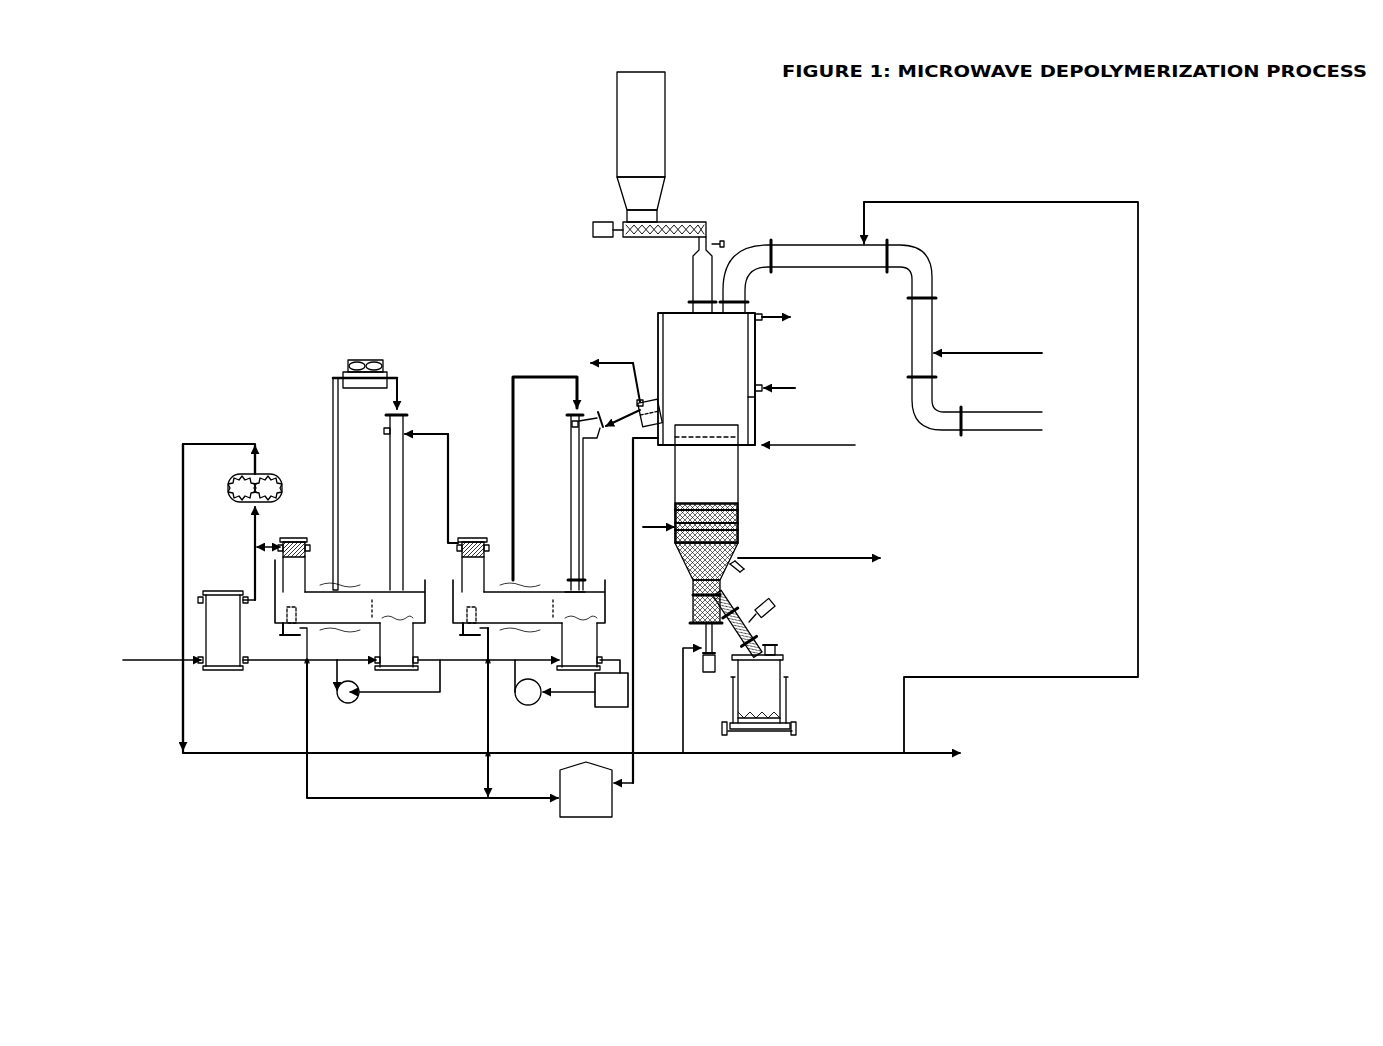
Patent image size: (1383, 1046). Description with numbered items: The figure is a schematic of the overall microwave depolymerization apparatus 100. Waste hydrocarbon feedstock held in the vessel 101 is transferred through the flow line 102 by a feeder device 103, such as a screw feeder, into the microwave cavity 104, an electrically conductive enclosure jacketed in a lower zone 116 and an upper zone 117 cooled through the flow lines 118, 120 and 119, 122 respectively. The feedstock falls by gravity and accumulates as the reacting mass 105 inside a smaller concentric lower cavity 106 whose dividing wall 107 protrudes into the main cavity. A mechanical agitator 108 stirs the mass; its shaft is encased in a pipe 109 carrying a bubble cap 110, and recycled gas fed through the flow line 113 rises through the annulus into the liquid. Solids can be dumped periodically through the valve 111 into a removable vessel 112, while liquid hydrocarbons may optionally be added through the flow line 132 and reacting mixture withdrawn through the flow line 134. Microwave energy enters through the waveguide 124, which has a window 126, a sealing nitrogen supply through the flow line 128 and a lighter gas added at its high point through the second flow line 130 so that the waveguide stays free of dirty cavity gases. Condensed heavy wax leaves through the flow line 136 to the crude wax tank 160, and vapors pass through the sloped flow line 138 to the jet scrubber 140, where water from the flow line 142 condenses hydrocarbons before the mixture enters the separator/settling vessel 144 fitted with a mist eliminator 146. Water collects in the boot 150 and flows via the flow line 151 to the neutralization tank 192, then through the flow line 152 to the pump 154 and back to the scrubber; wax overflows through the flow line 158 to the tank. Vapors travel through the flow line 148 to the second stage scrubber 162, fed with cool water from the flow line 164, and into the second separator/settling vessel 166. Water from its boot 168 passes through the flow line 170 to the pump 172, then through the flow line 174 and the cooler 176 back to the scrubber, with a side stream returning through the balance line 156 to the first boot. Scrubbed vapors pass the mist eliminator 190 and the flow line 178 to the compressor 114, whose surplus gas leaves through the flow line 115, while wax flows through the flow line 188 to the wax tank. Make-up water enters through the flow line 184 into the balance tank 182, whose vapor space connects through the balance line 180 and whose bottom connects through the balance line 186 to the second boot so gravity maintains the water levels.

The microwave depolymerization apparatus 100 is at (1105, 151).
The vessel 101 is at (628, 163).
The flow line 102 is at (700, 292).
The feeder device 103 is at (690, 222).
The microwave cavity 104 is at (708, 372).
The reacting mass 105 is at (712, 506).
The lower microwave cavity 106 is at (742, 476).
The dividing wall 107 is at (742, 428).
The mechanical agitator 108 is at (724, 526).
The pipe 109 is at (720, 582).
The bubble cap 110 is at (718, 547).
The valve 111 is at (772, 612).
The vessel 112 is at (738, 683).
The flow line 113 is at (684, 656).
The compressor 114 is at (263, 473).
The flow line 115 is at (735, 756).
The lower jacket zone 116 is at (758, 420).
The upper jacket zone 117 is at (758, 360).
The flow line 118 is at (848, 447).
The flow line 119 is at (786, 386).
The flow line 120 is at (602, 381).
The flow line 122 is at (768, 312).
The waveguide 124 is at (931, 322).
The window 126 is at (966, 420).
The flow line 128 is at (990, 352).
The second flow line 130 is at (868, 220).
The flow line 132 is at (662, 524).
The flow line 134 is at (873, 555).
The flow line 136 is at (630, 542).
The flow line 138 is at (622, 432).
The jet scrubber 140 is at (570, 481).
The flow line 142 is at (511, 417).
The separator/settling vessel 144 is at (568, 594).
The mist eliminator 146 is at (465, 556).
The flow line 148 is at (450, 478).
The boot 150 is at (595, 641).
The flow line 151 is at (623, 656).
The flow line 152 is at (553, 695).
The pump 154 is at (523, 701).
The balance line 156 is at (455, 665).
The flow line 158 is at (486, 737).
The crude wax tank 160 is at (562, 803).
The second stage scrubber 162 is at (388, 481).
The flow line 164 is at (399, 384).
The second separator/settling vessel 166 is at (383, 596).
The boot 168 is at (421, 641).
The flow line 170 is at (380, 695).
The pump 172 is at (340, 701).
The flow line 174 is at (331, 417).
The cooler 176 is at (372, 372).
The flow line 178 is at (259, 515).
The balance line 180 is at (254, 562).
The balance tank 182 is at (210, 612).
The flow line 184 is at (185, 658).
The balance line 186 is at (290, 662).
The flow line 188 is at (304, 796).
The mist eliminator 190 is at (277, 547).
The neutralization tank 192 is at (616, 696).